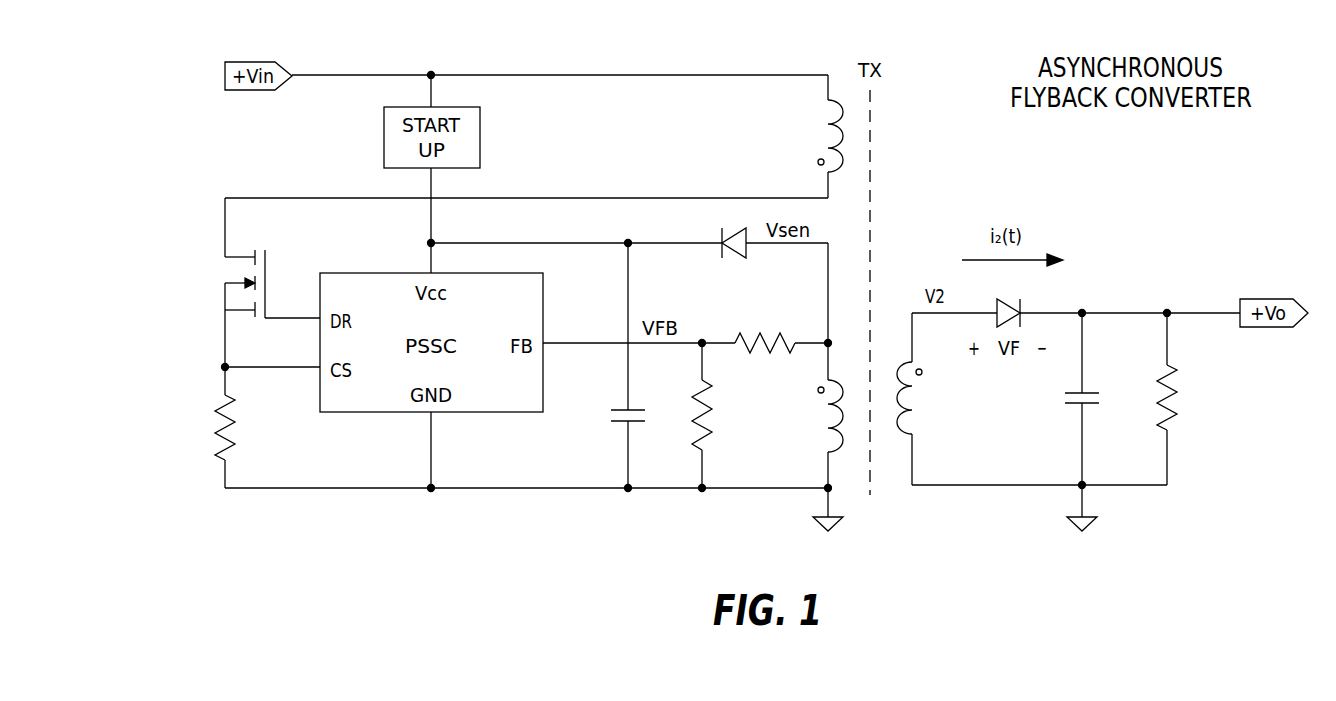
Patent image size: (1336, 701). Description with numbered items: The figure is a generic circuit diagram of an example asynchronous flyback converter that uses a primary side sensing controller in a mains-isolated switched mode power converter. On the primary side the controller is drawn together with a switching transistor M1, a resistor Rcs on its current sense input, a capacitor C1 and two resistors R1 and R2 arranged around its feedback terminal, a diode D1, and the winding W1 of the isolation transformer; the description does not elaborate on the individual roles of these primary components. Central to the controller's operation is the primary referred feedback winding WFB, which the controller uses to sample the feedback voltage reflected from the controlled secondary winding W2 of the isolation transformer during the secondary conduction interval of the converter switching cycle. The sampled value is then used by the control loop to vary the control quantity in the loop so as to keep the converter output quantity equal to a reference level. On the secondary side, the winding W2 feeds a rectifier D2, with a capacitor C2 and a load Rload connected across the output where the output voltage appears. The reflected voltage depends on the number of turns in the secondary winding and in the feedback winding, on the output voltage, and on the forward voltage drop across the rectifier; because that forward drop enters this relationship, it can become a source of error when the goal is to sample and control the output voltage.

The power MOSFET switch M1 is at (257, 296).
The current sense resistor Rcs is at (203, 441).
The feedback capacitor C1 is at (615, 365).
The feedback divider resistor R1 is at (718, 415).
The feedback divider resistor R2 is at (781, 328).
The sense diode D1 is at (734, 231).
The primary winding W1 is at (806, 136).
The feedback winding WFB is at (804, 455).
The secondary winding W2 is at (932, 399).
The output rectifier diode D2 is at (1008, 300).
The output capacitor C2 is at (1097, 422).
The load resistor Rload is at (1197, 399).